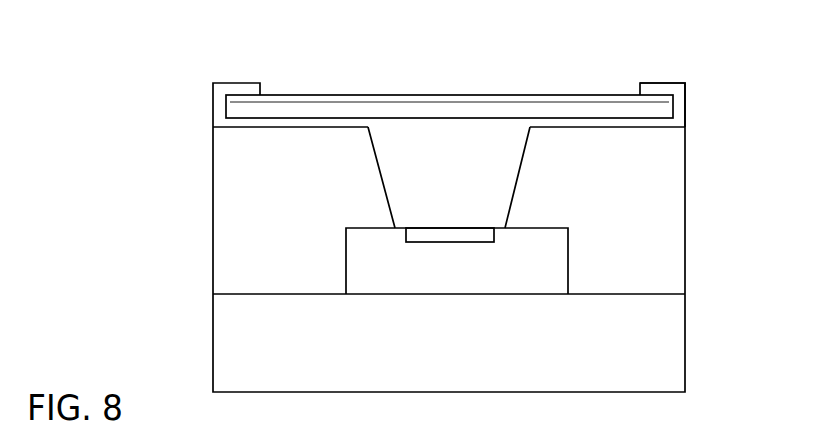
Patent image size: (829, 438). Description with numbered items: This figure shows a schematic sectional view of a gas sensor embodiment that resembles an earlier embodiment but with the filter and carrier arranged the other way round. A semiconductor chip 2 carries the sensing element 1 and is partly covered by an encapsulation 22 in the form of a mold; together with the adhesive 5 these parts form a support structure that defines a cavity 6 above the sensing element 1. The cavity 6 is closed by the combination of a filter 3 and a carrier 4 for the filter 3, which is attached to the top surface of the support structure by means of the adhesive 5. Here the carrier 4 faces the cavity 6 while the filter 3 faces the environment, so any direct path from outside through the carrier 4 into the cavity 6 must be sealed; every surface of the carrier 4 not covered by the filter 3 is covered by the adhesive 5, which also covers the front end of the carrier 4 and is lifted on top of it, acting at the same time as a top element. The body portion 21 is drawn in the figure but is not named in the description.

The sensing element 1 is at (458, 237).
The semiconductor chip 2 is at (498, 265).
The filter 3 is at (353, 95).
The carrier 4 is at (468, 110).
The adhesive 5 is at (665, 128).
The cavity 6 is at (449, 177).
The upper body portion 21 is at (449, 188).
The encapsulation 22 is at (449, 343).